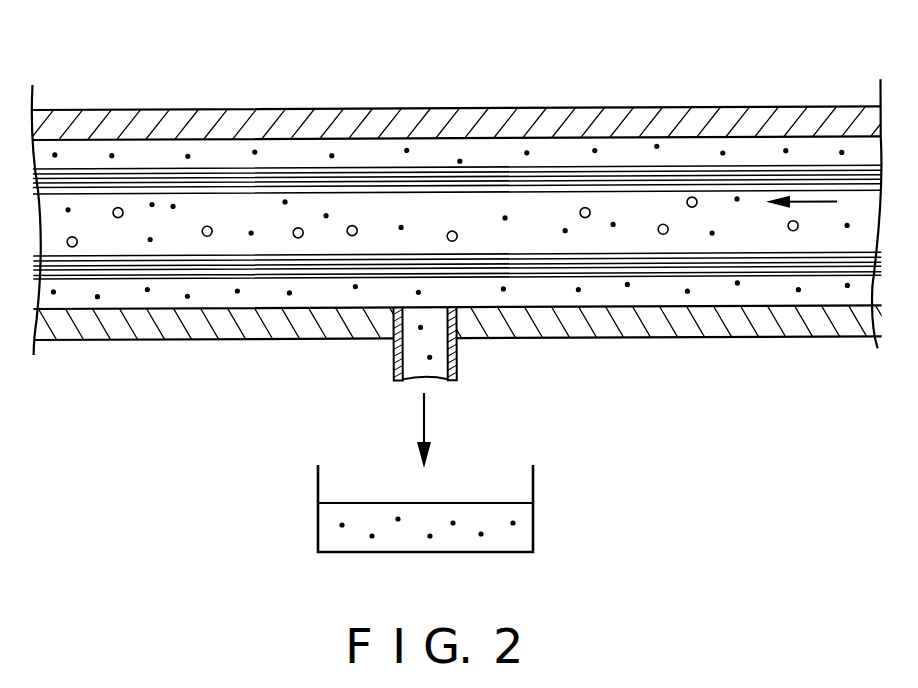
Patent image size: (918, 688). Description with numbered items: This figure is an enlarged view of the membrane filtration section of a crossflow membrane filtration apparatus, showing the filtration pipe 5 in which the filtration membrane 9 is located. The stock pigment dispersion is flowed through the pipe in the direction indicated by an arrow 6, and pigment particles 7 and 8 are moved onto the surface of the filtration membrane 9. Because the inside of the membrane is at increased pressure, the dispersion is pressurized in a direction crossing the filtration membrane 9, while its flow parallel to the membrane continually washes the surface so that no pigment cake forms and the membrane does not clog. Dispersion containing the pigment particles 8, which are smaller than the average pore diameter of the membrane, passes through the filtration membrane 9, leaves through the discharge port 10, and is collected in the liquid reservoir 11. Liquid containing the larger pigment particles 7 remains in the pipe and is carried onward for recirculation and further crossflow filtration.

The pipe 5 is at (603, 108).
The arrow 6 is at (817, 209).
The pigment particles 7 is at (448, 232).
The pigment particles 8 is at (329, 216).
The filtration membrane 9 is at (508, 268).
The discharge port 10 is at (455, 358).
The liquid reservoir 11 is at (517, 533).